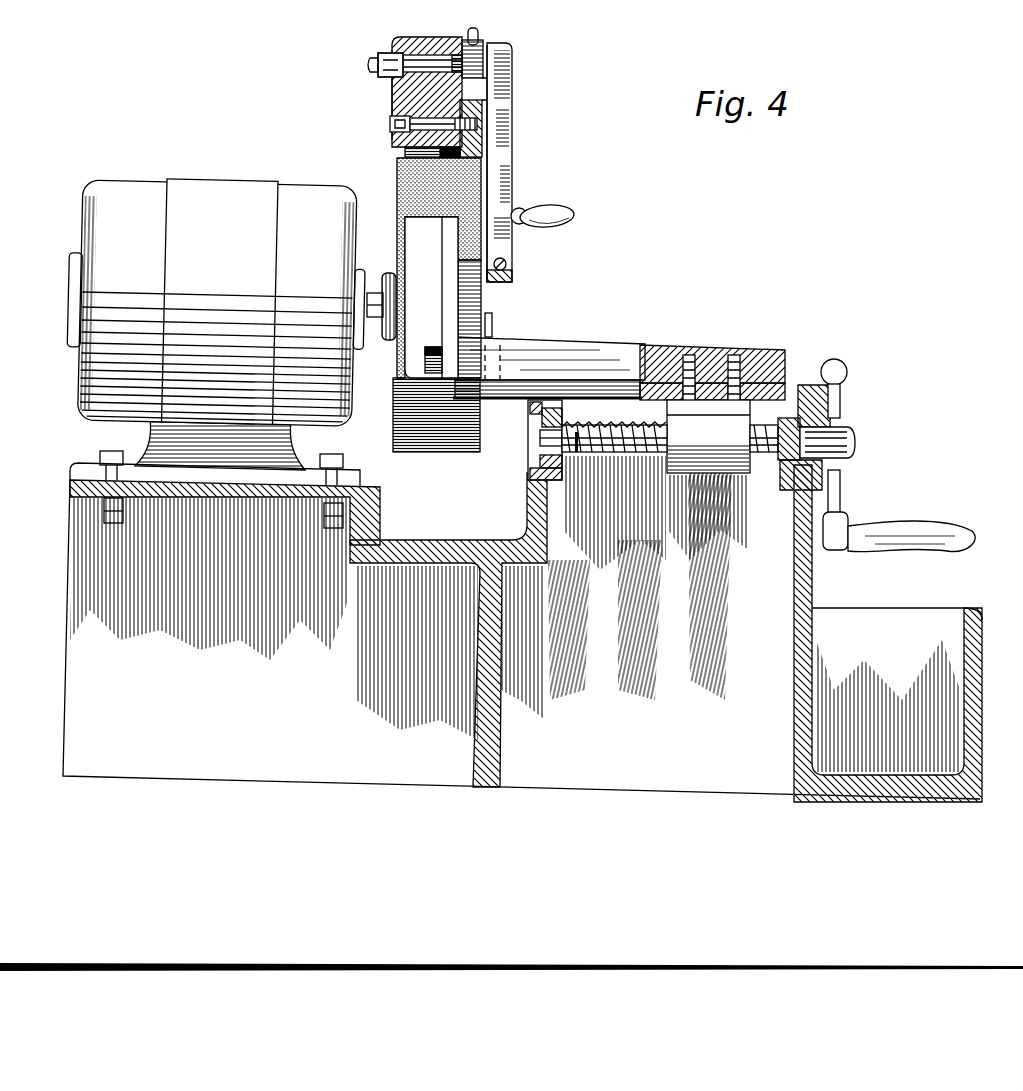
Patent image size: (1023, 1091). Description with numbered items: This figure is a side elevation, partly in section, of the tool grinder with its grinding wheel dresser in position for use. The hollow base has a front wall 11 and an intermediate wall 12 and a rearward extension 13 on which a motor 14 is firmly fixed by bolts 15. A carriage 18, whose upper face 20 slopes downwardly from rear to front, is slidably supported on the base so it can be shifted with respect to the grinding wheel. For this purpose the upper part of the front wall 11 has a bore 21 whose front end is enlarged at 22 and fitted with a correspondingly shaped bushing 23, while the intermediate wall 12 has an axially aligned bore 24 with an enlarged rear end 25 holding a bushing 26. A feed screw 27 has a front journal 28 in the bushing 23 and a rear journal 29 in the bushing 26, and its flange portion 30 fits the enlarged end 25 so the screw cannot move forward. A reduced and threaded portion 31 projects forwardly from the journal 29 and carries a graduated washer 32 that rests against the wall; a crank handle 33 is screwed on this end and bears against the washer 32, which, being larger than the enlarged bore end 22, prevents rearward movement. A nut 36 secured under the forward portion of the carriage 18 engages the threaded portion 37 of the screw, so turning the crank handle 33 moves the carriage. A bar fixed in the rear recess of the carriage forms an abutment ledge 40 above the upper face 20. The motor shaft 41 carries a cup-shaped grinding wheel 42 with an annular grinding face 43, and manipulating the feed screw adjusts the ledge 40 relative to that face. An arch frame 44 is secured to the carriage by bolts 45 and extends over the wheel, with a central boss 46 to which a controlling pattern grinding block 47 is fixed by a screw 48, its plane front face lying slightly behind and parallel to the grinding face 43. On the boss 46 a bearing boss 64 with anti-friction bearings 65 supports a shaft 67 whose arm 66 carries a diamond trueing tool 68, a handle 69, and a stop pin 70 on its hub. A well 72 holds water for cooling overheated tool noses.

The front wall 11 is at (797, 566).
The intermediate wall 12 is at (537, 528).
The rearward extension 13 is at (80, 638).
The motor 14 is at (222, 189).
The bolts 15 is at (110, 507).
The carriage 18 is at (613, 356).
The upper face 20 is at (599, 338).
The bore 21 is at (788, 479).
The enlarged front end 22 is at (787, 473).
The bushing 23 is at (783, 471).
The bore 24 is at (542, 419).
The enlarged rear end 25 is at (530, 406).
The bushing 26 is at (533, 481).
The feed screw 27 is at (572, 457).
The journal 28 is at (743, 469).
The journal 29 is at (543, 440).
The flange portion 30 is at (540, 457).
The reduced and threaded portion 31 is at (855, 443).
The graduated washer 32 is at (824, 402).
The crank handle 33 is at (838, 505).
The nut 36 is at (708, 436).
The threaded portion 37 is at (647, 462).
The abutment ledge 40 is at (493, 321).
The shaft 41 is at (378, 299).
The grinding wheel 42 is at (402, 175).
The grinding face 43 is at (483, 186).
The arch frame 44 is at (431, 297).
The bolts 45 is at (432, 349).
The boss 46 is at (400, 104).
The controlling pattern grinding block 47 is at (480, 121).
The screw 48 is at (392, 126).
The bearing boss 64 is at (396, 38).
The anti-friction bearings 65 is at (458, 45).
The arm 66 is at (505, 121).
The shaft 67 is at (395, 86).
The diamond trueing tool 68 is at (486, 266).
The handle 69 is at (548, 213).
The stop pin 70 is at (478, 34).
The well 72 is at (977, 649).